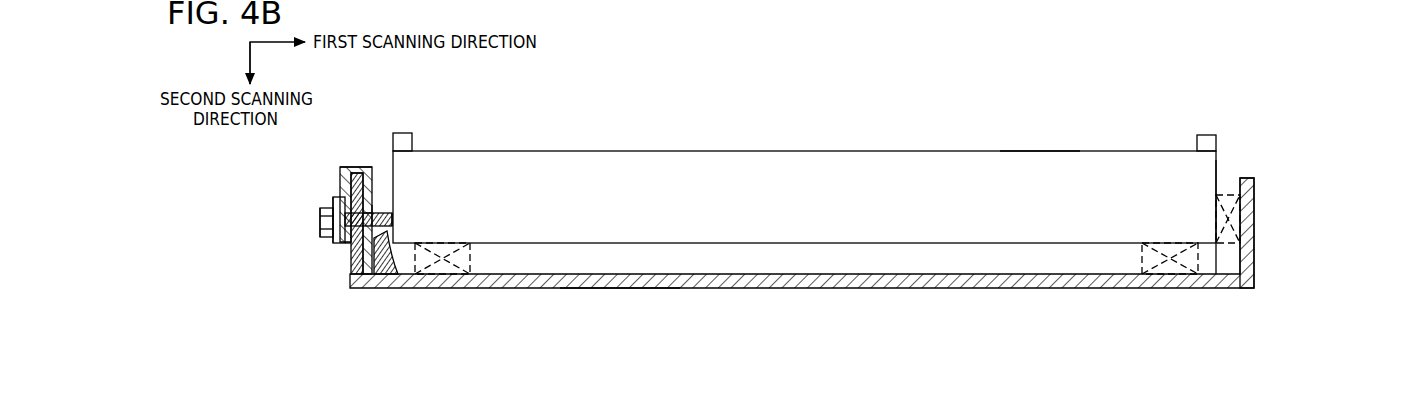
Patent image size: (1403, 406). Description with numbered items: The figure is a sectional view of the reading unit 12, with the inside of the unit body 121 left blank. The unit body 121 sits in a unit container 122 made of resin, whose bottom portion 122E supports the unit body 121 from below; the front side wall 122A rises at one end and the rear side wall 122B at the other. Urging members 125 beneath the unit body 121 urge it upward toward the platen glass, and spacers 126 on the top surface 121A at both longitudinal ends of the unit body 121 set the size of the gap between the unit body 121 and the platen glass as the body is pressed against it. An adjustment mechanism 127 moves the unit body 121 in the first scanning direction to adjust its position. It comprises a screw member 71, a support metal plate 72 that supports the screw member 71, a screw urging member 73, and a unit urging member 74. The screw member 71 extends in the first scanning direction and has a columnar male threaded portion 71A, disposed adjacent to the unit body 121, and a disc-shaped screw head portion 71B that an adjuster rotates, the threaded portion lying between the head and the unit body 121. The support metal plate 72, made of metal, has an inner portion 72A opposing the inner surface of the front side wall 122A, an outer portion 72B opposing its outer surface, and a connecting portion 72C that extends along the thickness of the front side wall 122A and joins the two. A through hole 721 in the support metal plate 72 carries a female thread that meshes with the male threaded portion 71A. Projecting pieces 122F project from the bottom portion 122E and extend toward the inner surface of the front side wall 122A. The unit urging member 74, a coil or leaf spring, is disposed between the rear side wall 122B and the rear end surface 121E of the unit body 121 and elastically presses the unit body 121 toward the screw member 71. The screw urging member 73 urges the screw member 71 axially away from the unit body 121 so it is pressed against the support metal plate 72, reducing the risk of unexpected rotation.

The reading unit 12 is at (1232, 106).
The screw member 71 is at (311, 242).
The male threaded portion 71A is at (392, 220).
The screw head portion 71B is at (322, 223).
The support metal plate 72 is at (368, 149).
The inner portion 72A is at (375, 204).
The outer portion 72B is at (340, 173).
The connecting portion 72C is at (348, 165).
The screw urging member 73 is at (347, 245).
The unit urging member 74 is at (1228, 254).
The unit body 121 is at (694, 254).
The top surface 121A is at (1040, 151).
The rear end surface 121E is at (1217, 178).
The unit container 122 is at (831, 296).
The front side wall 122A is at (352, 188).
The rear side wall 122B is at (1263, 207).
The bottom portion 122E is at (612, 296).
The projecting piece 122F is at (392, 252).
The urging member 125 is at (484, 260).
The spacer 126 is at (410, 134).
The adjustment mechanism 127 is at (313, 264).
The through hole 721 is at (375, 202).